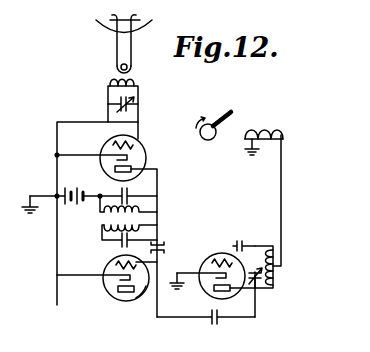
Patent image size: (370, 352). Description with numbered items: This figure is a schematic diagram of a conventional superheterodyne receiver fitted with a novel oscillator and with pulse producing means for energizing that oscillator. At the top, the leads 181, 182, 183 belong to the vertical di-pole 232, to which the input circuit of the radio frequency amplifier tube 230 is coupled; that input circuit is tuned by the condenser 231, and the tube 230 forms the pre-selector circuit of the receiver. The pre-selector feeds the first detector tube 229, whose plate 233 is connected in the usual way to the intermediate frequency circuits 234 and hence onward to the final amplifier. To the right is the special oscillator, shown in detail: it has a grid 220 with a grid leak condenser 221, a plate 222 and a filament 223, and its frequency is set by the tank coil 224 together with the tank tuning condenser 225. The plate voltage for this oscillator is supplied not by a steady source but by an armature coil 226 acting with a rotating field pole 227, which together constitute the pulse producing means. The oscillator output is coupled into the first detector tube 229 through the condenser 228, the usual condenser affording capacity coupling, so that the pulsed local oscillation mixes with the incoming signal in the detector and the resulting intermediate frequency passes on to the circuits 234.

The antenna lead 181 is at (107, 10).
The antenna lead 182 is at (165, 35).
The antenna lead 183 is at (142, 33).
The vertical di-pole 232 is at (107, 27).
The condenser 231 is at (108, 101).
The radio frequency amplifier tube 230 is at (147, 158).
The first detector tube 229 is at (108, 282).
The plate 233 is at (124, 293).
The intermediate frequency circuits 234 is at (143, 297).
The filament 223 is at (205, 265).
The grid 220 is at (220, 259).
The grid leak condenser 221 is at (244, 244).
The plate 222 is at (226, 292).
The condenser 228 is at (206, 327).
The tank coil 224 is at (274, 275).
The tank tuning condenser 225 is at (259, 279).
The armature coil 226 is at (272, 125).
The rotating field pole 227 is at (223, 112).